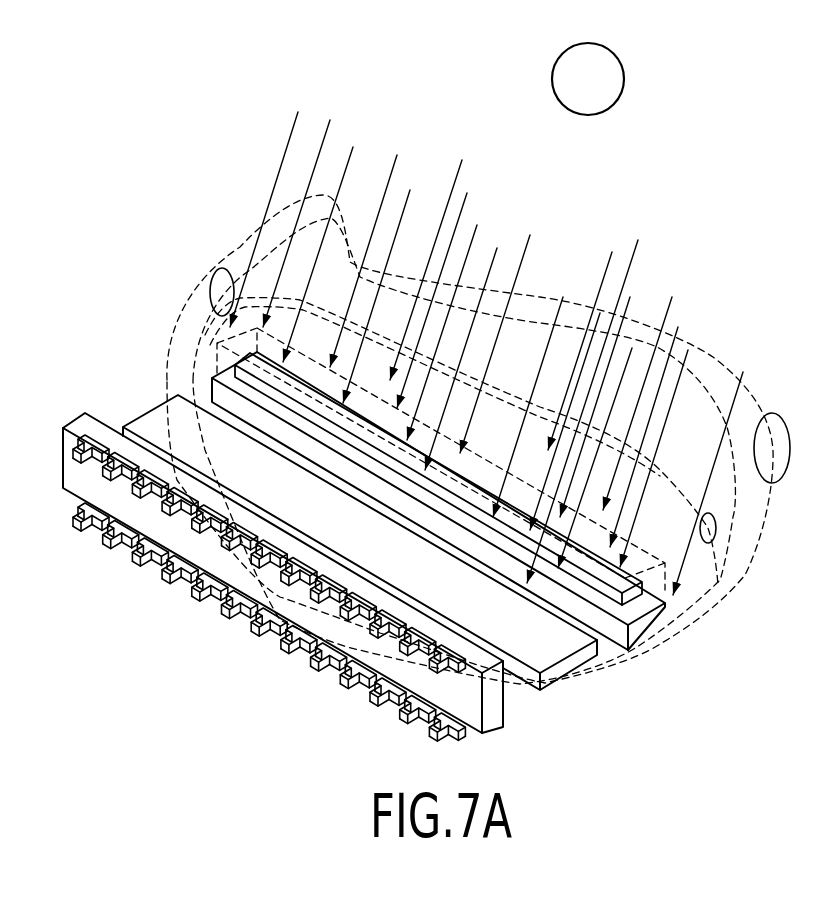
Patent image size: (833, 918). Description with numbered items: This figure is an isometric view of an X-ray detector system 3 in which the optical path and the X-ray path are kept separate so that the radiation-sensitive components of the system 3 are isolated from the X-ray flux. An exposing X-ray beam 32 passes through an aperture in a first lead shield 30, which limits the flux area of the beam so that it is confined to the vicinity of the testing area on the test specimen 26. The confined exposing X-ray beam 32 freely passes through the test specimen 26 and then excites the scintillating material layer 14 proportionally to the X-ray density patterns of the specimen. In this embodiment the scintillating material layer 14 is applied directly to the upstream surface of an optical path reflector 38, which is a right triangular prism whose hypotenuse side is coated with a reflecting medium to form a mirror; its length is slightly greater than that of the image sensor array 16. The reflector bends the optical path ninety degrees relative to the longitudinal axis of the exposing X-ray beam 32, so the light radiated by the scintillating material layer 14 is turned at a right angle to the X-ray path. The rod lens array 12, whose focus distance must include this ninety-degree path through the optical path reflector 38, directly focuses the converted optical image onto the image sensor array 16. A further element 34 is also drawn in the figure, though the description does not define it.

The X-ray detector system 3 is at (150, 150).
The rod lens array 12 is at (548, 688).
The scintillating material layer 14 is at (668, 606).
The image sensor array 16 is at (490, 732).
The test specimen 26 is at (716, 524).
The first lead shield 30 is at (218, 268).
The exposing X-ray beam 32 is at (388, 168).
The target spot 34 is at (624, 74).
The optical path reflector 38 is at (634, 648).